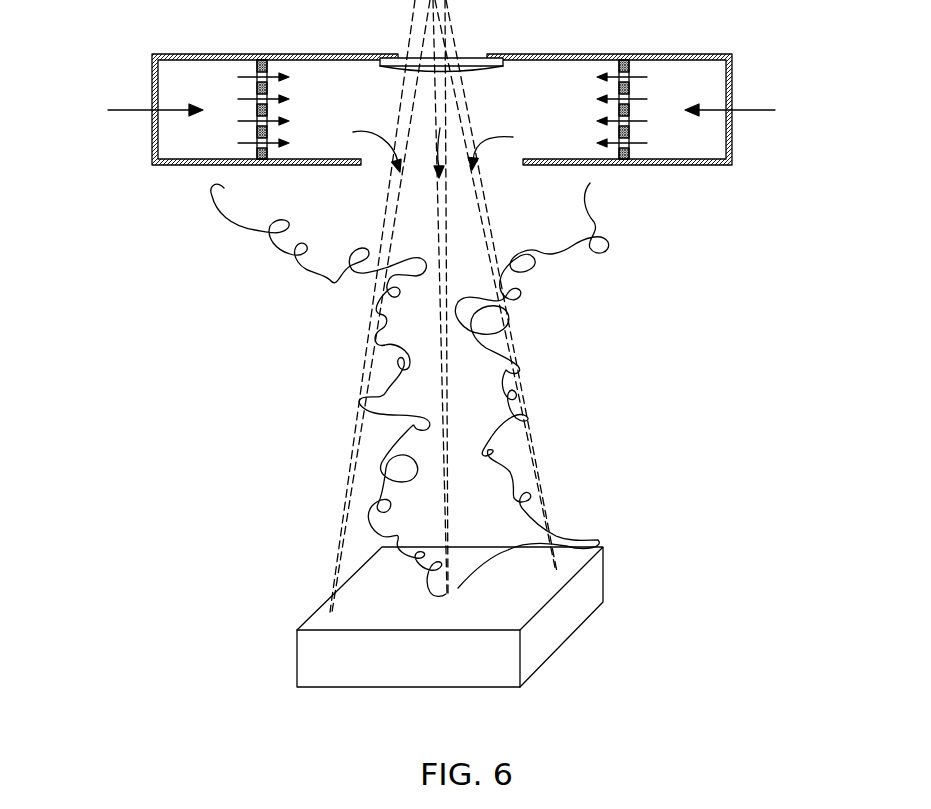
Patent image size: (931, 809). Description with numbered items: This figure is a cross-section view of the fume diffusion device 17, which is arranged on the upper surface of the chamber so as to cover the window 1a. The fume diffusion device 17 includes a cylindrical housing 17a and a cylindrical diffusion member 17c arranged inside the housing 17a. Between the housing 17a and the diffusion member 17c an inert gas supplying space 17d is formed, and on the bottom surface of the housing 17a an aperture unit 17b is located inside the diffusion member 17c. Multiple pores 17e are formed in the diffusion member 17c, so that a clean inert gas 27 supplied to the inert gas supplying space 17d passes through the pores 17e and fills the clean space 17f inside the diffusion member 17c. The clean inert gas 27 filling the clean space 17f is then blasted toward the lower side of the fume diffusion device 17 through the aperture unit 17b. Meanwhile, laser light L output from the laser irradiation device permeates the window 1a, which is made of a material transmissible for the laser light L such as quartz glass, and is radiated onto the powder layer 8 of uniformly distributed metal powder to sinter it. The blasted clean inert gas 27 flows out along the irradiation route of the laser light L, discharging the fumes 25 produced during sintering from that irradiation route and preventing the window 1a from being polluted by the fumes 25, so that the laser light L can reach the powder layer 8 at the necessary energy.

The window 1a is at (468, 56).
The powder layer 8 is at (596, 582).
The fume diffusion device 17 is at (468, 123).
The housing 17a is at (733, 158).
The aperture unit 17b is at (501, 170).
The diffusion member 17c is at (262, 60).
The inert gas supplying space 17d is at (212, 144).
The pores 17e is at (640, 62).
The clean space 17f is at (573, 119).
The fumes 25 is at (595, 220).
The clean inert gas 27 is at (745, 110).
The laser light L is at (388, 195).